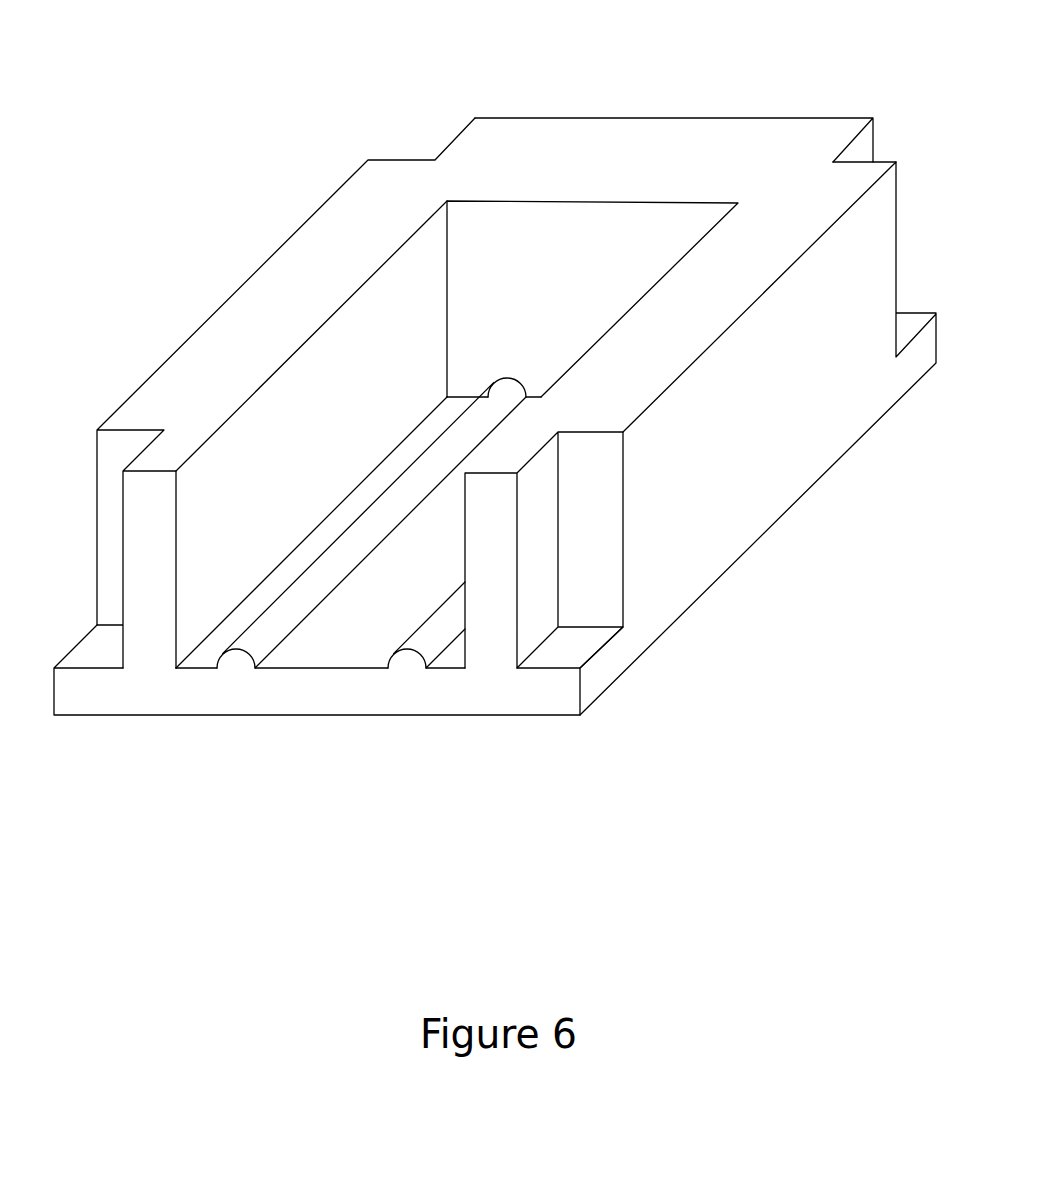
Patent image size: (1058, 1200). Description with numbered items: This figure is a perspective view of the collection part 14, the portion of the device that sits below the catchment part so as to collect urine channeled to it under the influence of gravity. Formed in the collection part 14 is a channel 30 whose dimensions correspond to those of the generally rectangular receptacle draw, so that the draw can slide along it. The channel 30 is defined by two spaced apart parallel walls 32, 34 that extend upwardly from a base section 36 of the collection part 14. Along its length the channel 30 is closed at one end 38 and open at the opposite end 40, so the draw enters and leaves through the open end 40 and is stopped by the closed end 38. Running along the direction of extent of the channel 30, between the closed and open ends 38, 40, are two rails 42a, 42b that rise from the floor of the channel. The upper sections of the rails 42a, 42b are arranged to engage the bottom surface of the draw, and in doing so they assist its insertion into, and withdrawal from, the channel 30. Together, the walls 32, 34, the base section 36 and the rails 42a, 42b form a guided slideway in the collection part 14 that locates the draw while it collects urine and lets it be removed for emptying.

The collection part 14 is at (690, 462).
The channel 30 is at (257, 486).
The wall 32 is at (307, 273).
The wall 34 is at (701, 302).
The base section 36 is at (410, 565).
The closed end 38 is at (601, 234).
The open end 40 is at (330, 672).
The rail 42a is at (262, 637).
The rail 42b is at (440, 635).